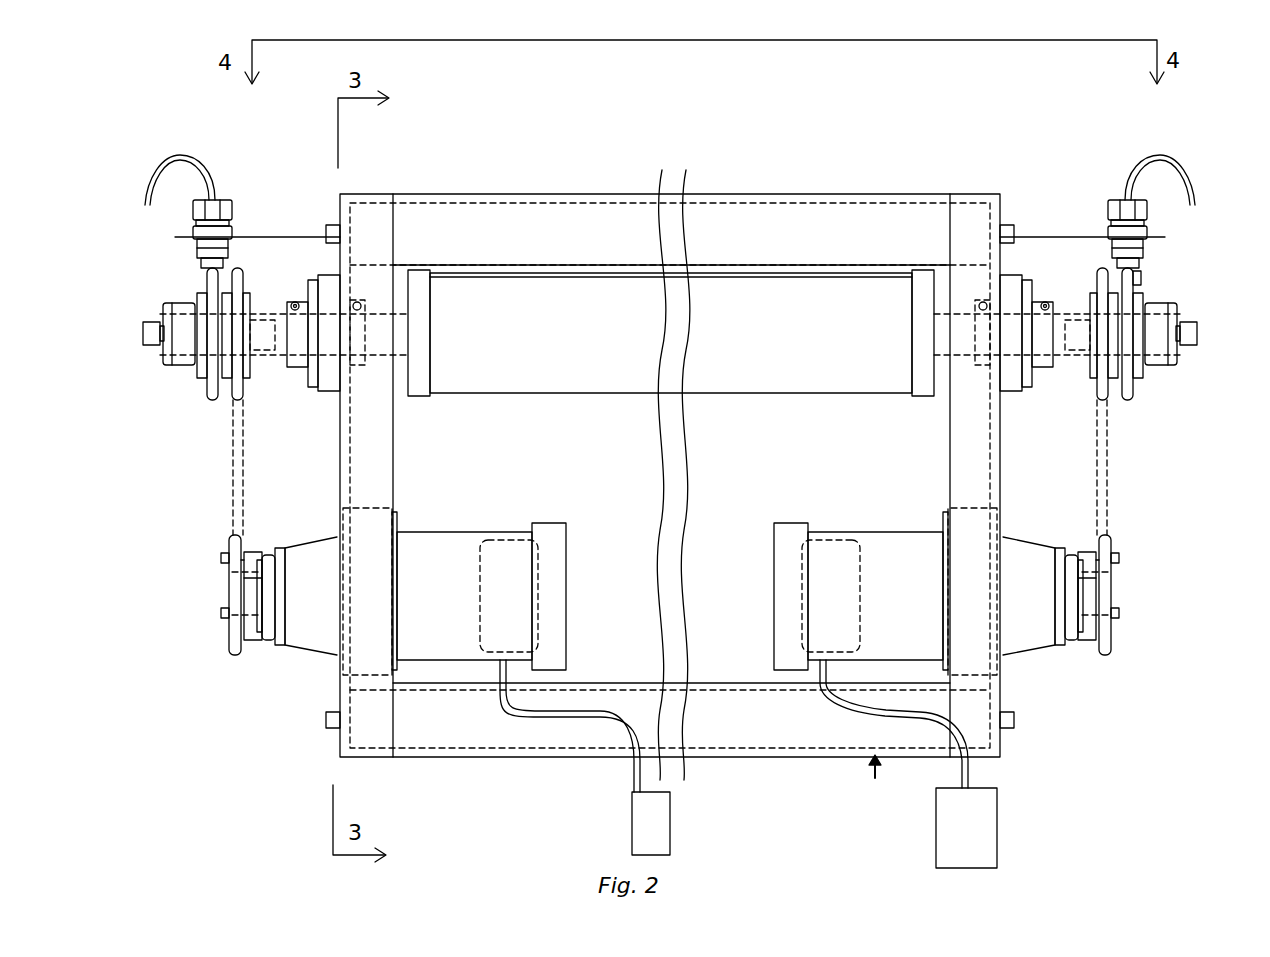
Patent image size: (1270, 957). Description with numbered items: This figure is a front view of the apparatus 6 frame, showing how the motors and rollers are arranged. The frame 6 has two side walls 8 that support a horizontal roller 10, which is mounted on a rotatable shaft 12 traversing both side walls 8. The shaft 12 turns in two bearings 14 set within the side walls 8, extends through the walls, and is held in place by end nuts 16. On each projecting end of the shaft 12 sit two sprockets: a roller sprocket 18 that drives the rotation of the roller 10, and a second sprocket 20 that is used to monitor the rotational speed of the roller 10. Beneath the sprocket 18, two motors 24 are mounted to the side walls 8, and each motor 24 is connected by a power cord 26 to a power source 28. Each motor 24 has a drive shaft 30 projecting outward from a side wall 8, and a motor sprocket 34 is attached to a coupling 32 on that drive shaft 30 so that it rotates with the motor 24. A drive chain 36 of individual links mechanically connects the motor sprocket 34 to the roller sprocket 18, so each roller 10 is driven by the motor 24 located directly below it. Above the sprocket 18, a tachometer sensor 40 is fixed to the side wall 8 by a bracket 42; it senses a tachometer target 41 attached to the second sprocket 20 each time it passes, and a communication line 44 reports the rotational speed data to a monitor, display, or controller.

The frame supporting structure 6 is at (875, 778).
The side walls 8 is at (330, 735).
The rollers 10 is at (800, 375).
The rotatable shaft 12 is at (400, 345).
The bearings 14 is at (358, 345).
The end nuts 16 is at (175, 360).
The roller sprocket 18 is at (240, 388).
The second sprocket 20 is at (212, 392).
The motor 24 is at (455, 540).
The power cord 26 is at (630, 780).
The power source 28 is at (655, 825).
The drive shaft 30 is at (282, 603).
The coupling 32 is at (262, 570).
The motor sprocket 34 is at (233, 648).
The drive chain 36 is at (244, 465).
The tachometer sensor 40 is at (225, 208).
The tachometer target 41 is at (1140, 278).
The bracket 42 is at (268, 237).
The communication line 44 is at (172, 160).